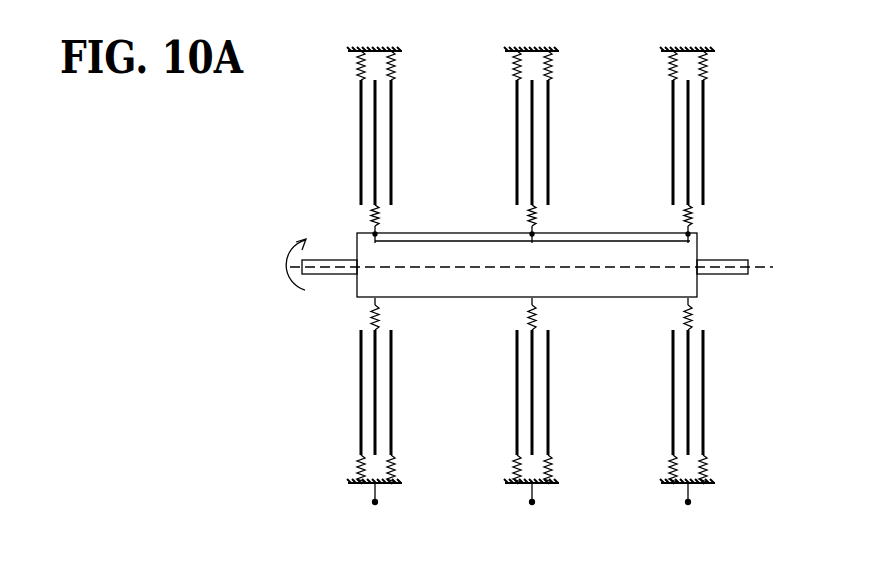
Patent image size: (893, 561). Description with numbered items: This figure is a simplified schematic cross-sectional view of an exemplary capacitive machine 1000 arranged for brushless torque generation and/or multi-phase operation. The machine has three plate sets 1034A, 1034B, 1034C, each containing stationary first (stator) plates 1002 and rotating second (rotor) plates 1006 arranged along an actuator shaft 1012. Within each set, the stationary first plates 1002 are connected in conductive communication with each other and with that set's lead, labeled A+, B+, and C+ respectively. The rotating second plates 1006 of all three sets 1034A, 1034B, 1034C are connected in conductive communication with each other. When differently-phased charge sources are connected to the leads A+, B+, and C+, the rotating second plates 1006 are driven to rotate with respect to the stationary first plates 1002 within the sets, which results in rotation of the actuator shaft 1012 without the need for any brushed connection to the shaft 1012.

The capacitive machine 1000 is at (287, 195).
The stationary first plates 1002 is at (359, 188).
The rotating second plates 1006 is at (377, 147).
The actuator shaft 1012 is at (715, 258).
The plate set 1034A is at (345, 137).
The plate set 1034B is at (503, 125).
The plate set 1034C is at (660, 127).